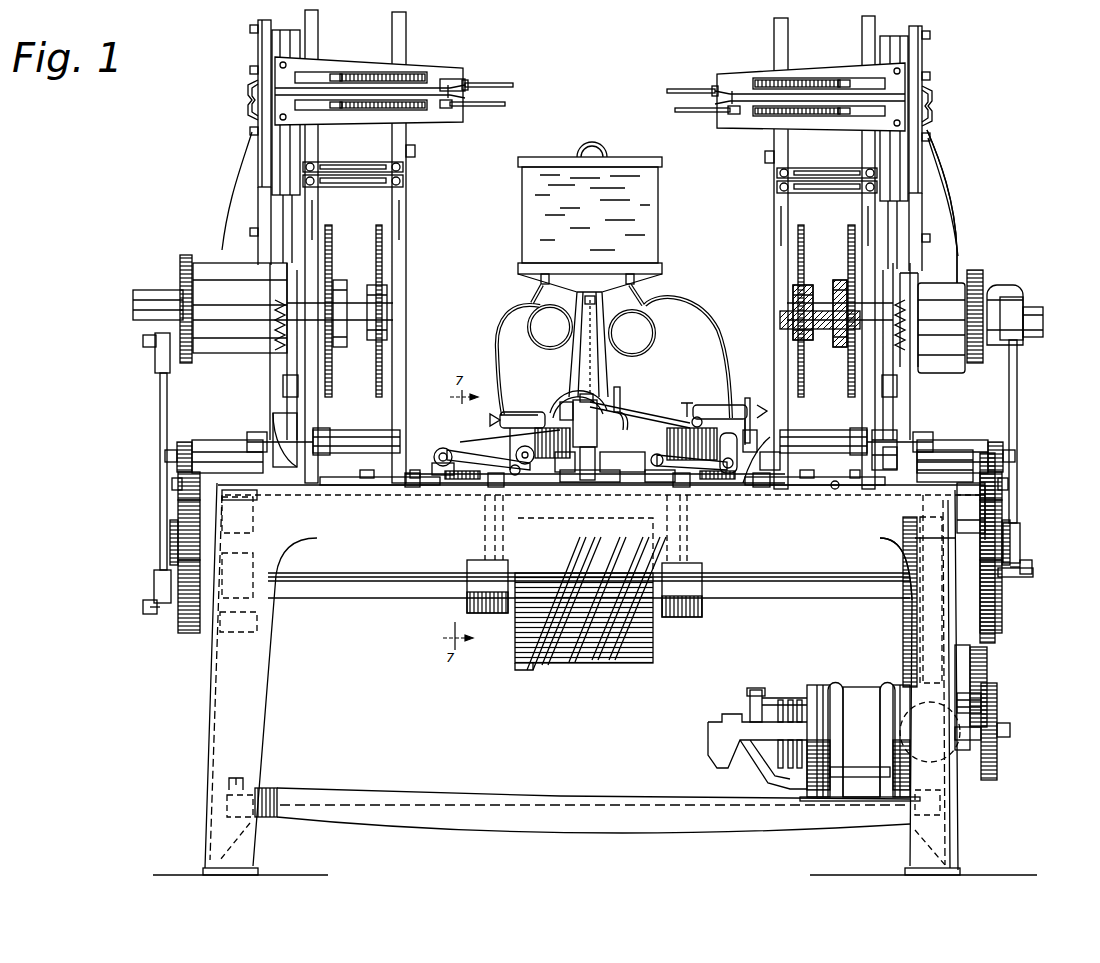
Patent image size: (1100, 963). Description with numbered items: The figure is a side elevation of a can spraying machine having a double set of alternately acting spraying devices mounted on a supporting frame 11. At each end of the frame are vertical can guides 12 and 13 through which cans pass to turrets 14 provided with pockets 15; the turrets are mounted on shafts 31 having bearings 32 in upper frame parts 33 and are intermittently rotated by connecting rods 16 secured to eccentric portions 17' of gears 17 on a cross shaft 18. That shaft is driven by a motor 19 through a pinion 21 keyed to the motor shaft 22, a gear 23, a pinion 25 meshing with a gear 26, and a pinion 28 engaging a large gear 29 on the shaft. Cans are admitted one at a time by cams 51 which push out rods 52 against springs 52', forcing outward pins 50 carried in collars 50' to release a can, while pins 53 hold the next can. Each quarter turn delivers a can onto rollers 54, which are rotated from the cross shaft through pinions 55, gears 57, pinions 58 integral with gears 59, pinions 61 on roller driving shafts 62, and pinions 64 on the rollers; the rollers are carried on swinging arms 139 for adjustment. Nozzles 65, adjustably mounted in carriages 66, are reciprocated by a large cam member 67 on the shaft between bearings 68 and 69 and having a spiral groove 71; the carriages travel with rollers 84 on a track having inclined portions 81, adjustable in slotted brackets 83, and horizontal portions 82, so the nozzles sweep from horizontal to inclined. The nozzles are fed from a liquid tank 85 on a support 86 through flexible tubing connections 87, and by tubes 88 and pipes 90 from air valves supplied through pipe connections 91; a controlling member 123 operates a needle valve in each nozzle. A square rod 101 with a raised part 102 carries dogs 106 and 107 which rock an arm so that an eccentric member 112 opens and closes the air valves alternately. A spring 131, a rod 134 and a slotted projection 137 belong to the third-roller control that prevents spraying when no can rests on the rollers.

The supporting frame 11 is at (255, 672).
The vertical can guide 12 is at (314, 46).
The vertical can guide 13 is at (868, 50).
The turret 14 is at (377, 290).
The pocket 15 is at (800, 260).
The connecting rod 16 is at (163, 444).
The gear 17 is at (609, 557).
The eccentric portion 17' is at (1037, 579).
The cross shaft 18 is at (792, 594).
The motor 19 is at (852, 700).
The pinion 21 is at (1003, 748).
The motor shaft 22 is at (968, 745).
The gear 23 is at (1000, 697).
The pinion 25 is at (1001, 710).
The gear 26 is at (987, 663).
The pinion 28 is at (905, 676).
The large gear 29 is at (878, 568).
The shaft 31 is at (366, 318).
The bearing 32 is at (217, 308).
The upper frame part 33 is at (933, 293).
The pin 50 is at (590, 80).
The collar 50' is at (488, 64).
The cam 51 is at (240, 95).
The rod 52 is at (590, 76).
The spring 52' is at (590, 57).
The pin 53 is at (490, 106).
The roller 54 is at (340, 437).
The pinion 55 is at (180, 522).
The gear 57 is at (192, 522).
The pinion 58 is at (226, 490).
The gear 59 is at (178, 485).
The pinion 61 is at (992, 453).
The roller driving shaft 62 is at (978, 467).
The pinion 64 is at (878, 440).
The nozzle 65 is at (747, 404).
The carriage 66 is at (680, 445).
The cam member 67 is at (623, 643).
The bearing 68 is at (697, 567).
The bearing 69 is at (470, 558).
The spiral groove 71 is at (548, 663).
The inclined track portion 81 is at (480, 456).
The horizontal track portion 82 is at (520, 463).
The slotted bracket 83 is at (443, 448).
The roller 84 is at (770, 437).
The liquid tank 85 is at (642, 242).
The support 86 is at (577, 365).
The flexible tubing connection 87 is at (690, 316).
The tube 88 is at (647, 420).
The pipe 90 is at (762, 403).
The pipe connection 91 is at (620, 400).
The square rod 101 is at (702, 480).
The raised part 102 is at (655, 446).
The dog 106 is at (628, 433).
The dog 107 is at (672, 483).
The eccentric member 112 is at (580, 477).
The manually operable controlling member 123 is at (697, 416).
The spring 131 is at (275, 340).
The rod 134 is at (897, 453).
The slotted projection 137 is at (294, 386).
The swinging arm 139 is at (289, 440).